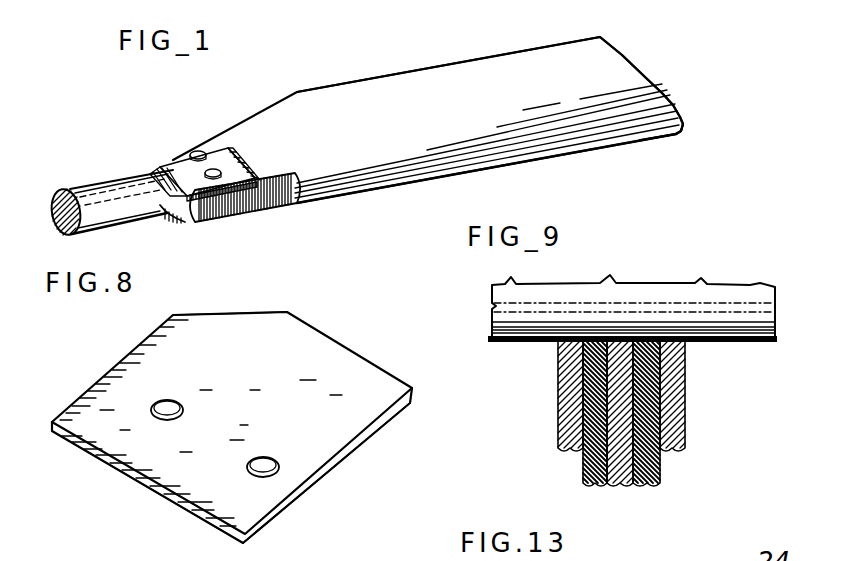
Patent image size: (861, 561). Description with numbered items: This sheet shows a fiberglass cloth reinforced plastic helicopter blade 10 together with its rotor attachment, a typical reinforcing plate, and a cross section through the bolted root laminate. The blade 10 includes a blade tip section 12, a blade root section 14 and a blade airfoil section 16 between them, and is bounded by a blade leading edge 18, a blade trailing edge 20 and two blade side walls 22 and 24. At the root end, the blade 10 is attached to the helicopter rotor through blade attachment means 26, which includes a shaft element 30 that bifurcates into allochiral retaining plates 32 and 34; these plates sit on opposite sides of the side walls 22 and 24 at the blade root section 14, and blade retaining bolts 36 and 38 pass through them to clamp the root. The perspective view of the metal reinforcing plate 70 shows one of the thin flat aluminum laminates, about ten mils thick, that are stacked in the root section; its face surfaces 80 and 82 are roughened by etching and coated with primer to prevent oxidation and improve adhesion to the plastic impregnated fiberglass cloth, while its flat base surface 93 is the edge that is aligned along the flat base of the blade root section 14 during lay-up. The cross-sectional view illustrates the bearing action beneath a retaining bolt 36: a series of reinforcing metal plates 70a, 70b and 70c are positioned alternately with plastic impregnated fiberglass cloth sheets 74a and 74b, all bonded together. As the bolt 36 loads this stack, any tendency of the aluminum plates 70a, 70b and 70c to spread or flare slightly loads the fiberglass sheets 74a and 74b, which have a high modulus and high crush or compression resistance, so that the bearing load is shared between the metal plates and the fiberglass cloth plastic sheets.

In FIG. 1, the helicopter blade 10 is at (404, 66).
In FIG. 1, the blade tip section 12 is at (640, 78).
In FIG. 1, the blade root section 14 is at (192, 150).
In FIG. 1, the blade airfoil section 16 is at (453, 88).
In FIG. 1, the blade leading edge 18 is at (553, 156).
In FIG. 1, the blade trailing edge 20 is at (348, 80).
In FIG. 1, the blade side wall 22 is at (527, 63).
In FIG. 1, the blade side wall 24 is at (638, 142).
In FIG. 1, the blade attachment means 26 is at (111, 174).
In FIG. 1, the shaft element 30 is at (88, 187).
In FIG. 1, the retaining plate 32 is at (235, 155).
In FIG. 1, the retaining plate 34 is at (182, 220).
In FIG. 1, the blade retaining bolt 36 is at (200, 148).
In FIG. 9, the blade retaining bolt 36 is at (663, 298).
In FIG. 1, the blade retaining bolt 38 is at (214, 166).
In FIG. 8, the reinforcing plate 70 is at (362, 375).
In FIG. 8, the face surface 80 is at (288, 343).
In FIG. 8, the face surface 82 is at (362, 460).
In FIG. 8, the flat base surface 93 is at (140, 477).
In FIG. 9, the reinforcing metal plate 70a is at (573, 428).
In FIG. 9, the plastic impregnated fiberglass cloth sheet 74a is at (599, 461).
In FIG. 9, the reinforcing metal plate 70b is at (622, 470).
In FIG. 9, the plastic impregnated fiberglass cloth sheet 74b is at (640, 483).
In FIG. 9, the reinforcing metal plate 70c is at (679, 427).